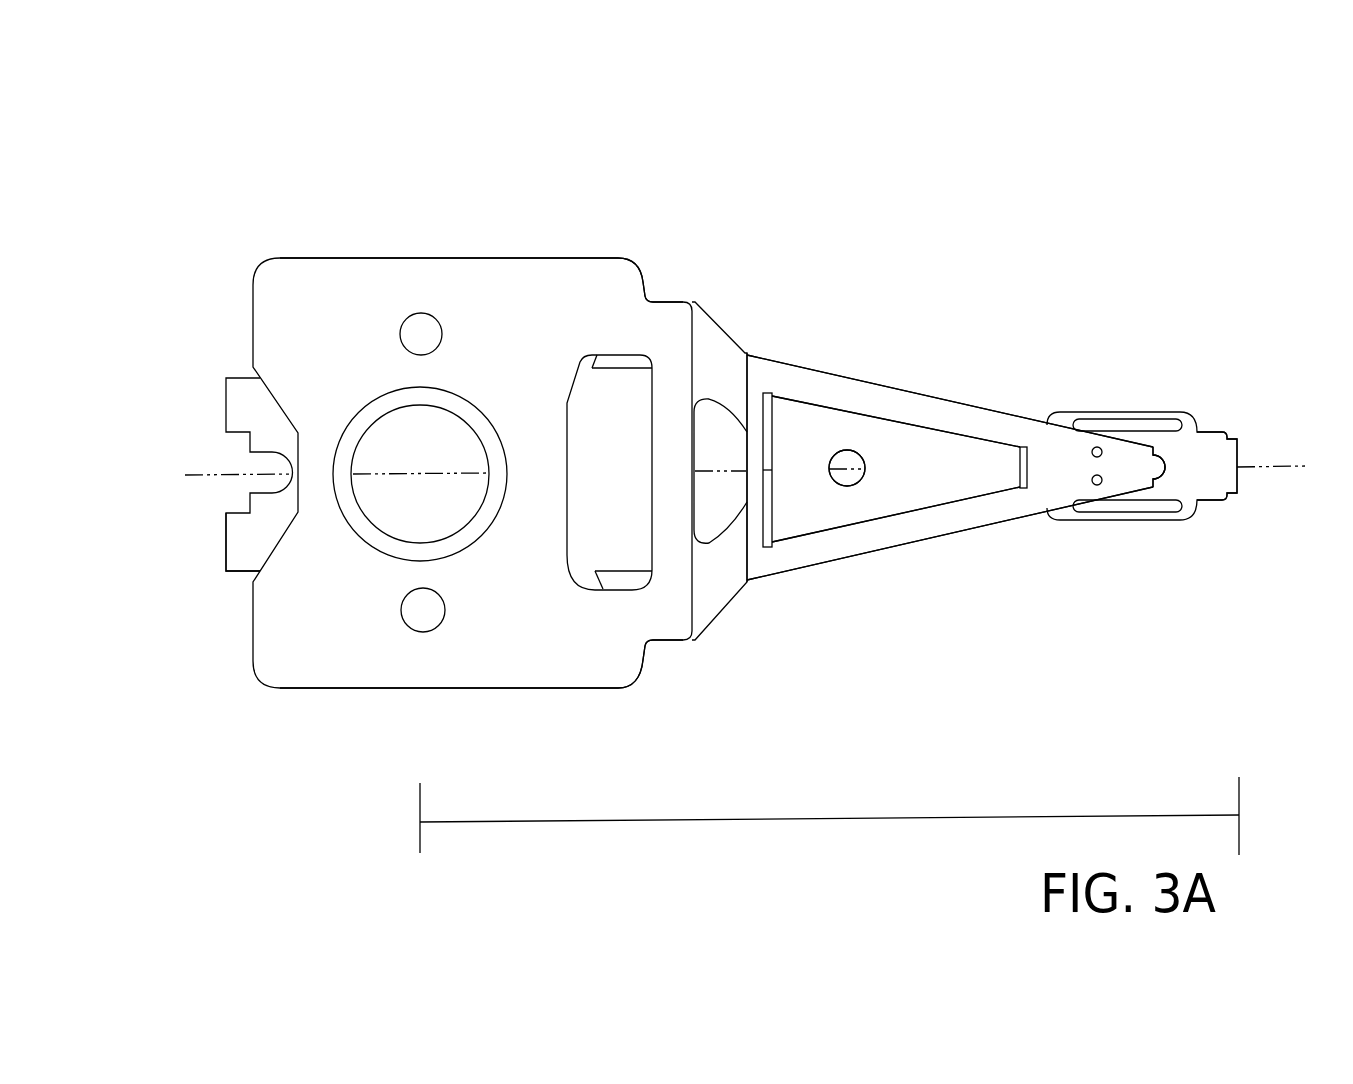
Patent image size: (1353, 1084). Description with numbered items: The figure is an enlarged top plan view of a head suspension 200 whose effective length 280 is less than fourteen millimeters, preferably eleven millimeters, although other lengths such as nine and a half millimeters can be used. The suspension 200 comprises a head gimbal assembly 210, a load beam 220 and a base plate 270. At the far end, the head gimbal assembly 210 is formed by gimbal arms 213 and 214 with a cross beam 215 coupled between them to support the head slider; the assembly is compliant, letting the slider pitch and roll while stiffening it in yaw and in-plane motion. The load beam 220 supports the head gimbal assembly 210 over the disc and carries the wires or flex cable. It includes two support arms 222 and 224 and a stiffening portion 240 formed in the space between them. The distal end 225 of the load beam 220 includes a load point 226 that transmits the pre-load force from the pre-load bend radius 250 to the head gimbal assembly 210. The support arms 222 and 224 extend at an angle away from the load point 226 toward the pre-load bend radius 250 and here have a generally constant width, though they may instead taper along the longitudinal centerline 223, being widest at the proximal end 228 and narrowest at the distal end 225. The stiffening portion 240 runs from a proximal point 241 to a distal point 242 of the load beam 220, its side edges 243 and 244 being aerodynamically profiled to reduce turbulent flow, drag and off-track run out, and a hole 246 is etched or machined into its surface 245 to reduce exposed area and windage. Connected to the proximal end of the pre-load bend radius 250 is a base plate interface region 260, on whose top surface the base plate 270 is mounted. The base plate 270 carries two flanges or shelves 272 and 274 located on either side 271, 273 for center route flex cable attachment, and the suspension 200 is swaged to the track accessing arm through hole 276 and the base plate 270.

The head suspension 200 is at (860, 183).
The head gimbal assembly 210 is at (1162, 445).
The gimbal arm 213 is at (1127, 418).
The gimbal arm 214 is at (1127, 522).
The cross beam 215 is at (1187, 472).
The load beam 220 is at (888, 386).
The support arm 222 is at (978, 423).
The longitudinal axis or centerline 223 is at (220, 473).
The support arm 224 is at (940, 522).
The distal end 225 is at (1155, 447).
The load point 226 is at (1155, 480).
The proximal end 228 is at (747, 388).
The stiffening portion 240 is at (915, 458).
The proximal point 241 is at (765, 538).
The distal point 242 is at (1027, 492).
The side edge 243 is at (830, 408).
The side edge 244 is at (817, 537).
The surface 245 is at (917, 481).
The hole or aperture 246 is at (852, 488).
The pre-load bend radius 250 is at (727, 353).
The base plate interface region 260 is at (235, 543).
The base plate 270 is at (333, 313).
The side of base plate 271 is at (505, 258).
The flange or shelf 272 is at (643, 280).
The side of base plate 273 is at (420, 690).
The flange or shelf 274 is at (648, 663).
The hole 276 is at (448, 410).
The effective length 280 is at (747, 822).